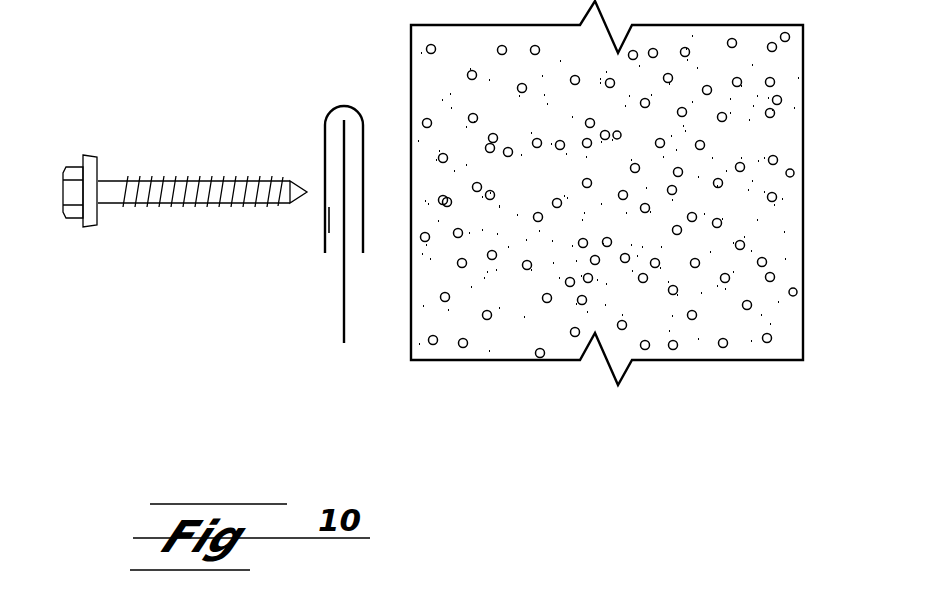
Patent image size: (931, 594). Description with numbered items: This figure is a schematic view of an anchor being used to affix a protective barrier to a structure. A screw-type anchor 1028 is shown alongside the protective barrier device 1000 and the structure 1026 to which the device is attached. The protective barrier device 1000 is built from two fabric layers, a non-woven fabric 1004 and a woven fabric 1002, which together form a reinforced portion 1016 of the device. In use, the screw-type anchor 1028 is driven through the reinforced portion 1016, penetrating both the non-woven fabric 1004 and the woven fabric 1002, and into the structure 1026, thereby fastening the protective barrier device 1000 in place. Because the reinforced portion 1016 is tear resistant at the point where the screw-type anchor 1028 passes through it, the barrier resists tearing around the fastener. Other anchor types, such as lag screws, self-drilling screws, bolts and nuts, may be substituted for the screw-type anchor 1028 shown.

The protective barrier device 1000 is at (193, 264).
The woven fabric 1002 is at (344, 327).
The non-woven fabric 1004 is at (308, 227).
The reinforced portion 1016 is at (284, 155).
The structure 1026 is at (485, 361).
The screw-type anchor 1028 is at (65, 224).